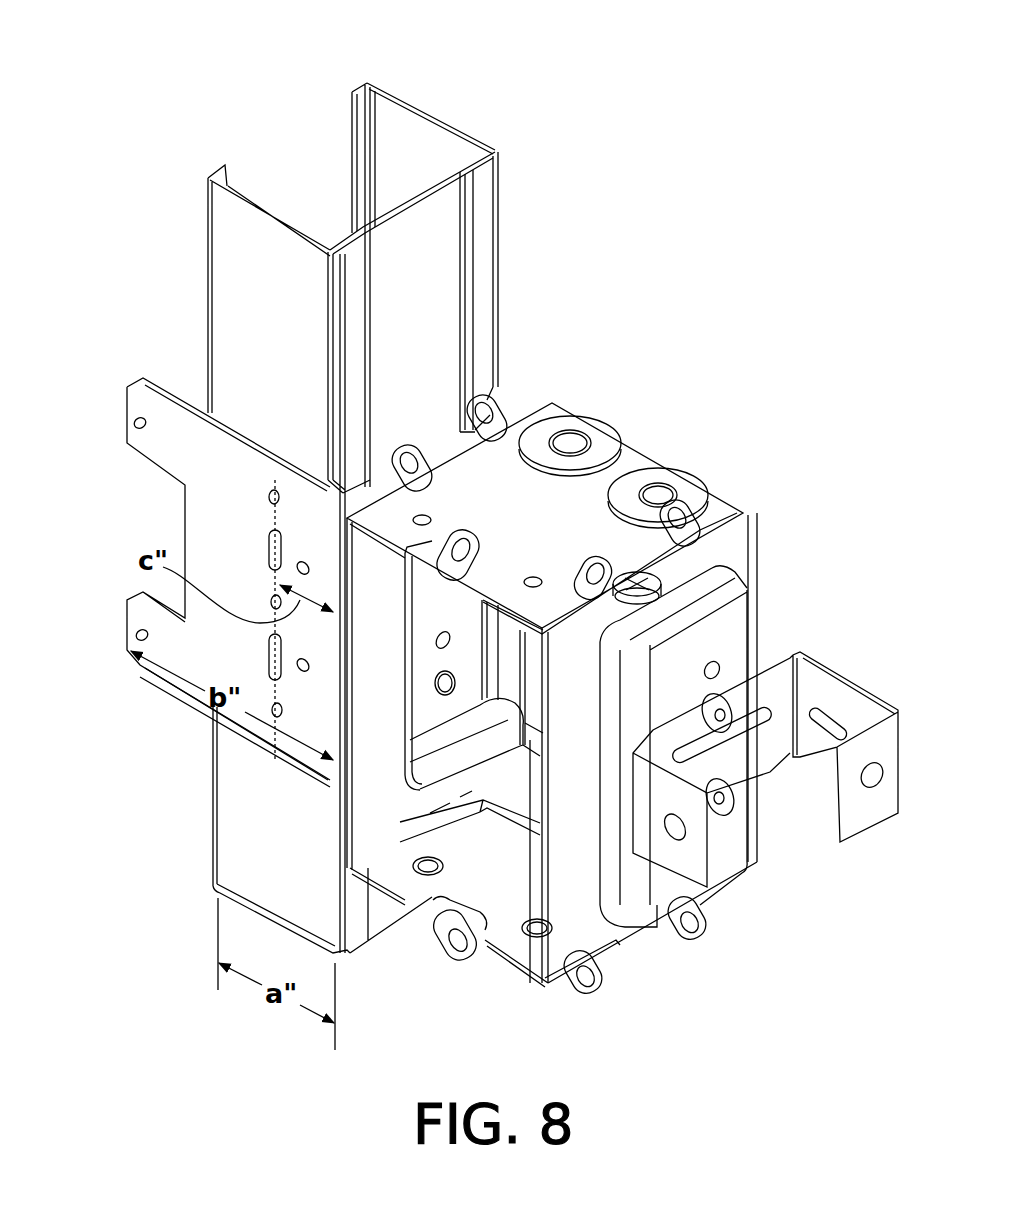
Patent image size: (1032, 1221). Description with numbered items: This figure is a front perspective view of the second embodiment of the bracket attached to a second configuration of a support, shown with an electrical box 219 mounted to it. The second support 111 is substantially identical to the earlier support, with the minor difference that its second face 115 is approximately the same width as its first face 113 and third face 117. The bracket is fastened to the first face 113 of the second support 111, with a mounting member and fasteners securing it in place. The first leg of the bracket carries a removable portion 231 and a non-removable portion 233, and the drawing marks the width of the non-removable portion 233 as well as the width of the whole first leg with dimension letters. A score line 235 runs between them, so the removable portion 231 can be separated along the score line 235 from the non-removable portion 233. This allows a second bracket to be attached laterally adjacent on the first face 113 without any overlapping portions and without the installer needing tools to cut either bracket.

The second support 111 is at (420, 98).
The first face 113 is at (263, 302).
The second face 115 is at (437, 282).
The third face 117 is at (470, 130).
The electrical box 219 is at (648, 447).
The removable portion 231 is at (180, 514).
The non-removable portion 233 is at (308, 774).
The score line 235 is at (265, 478).